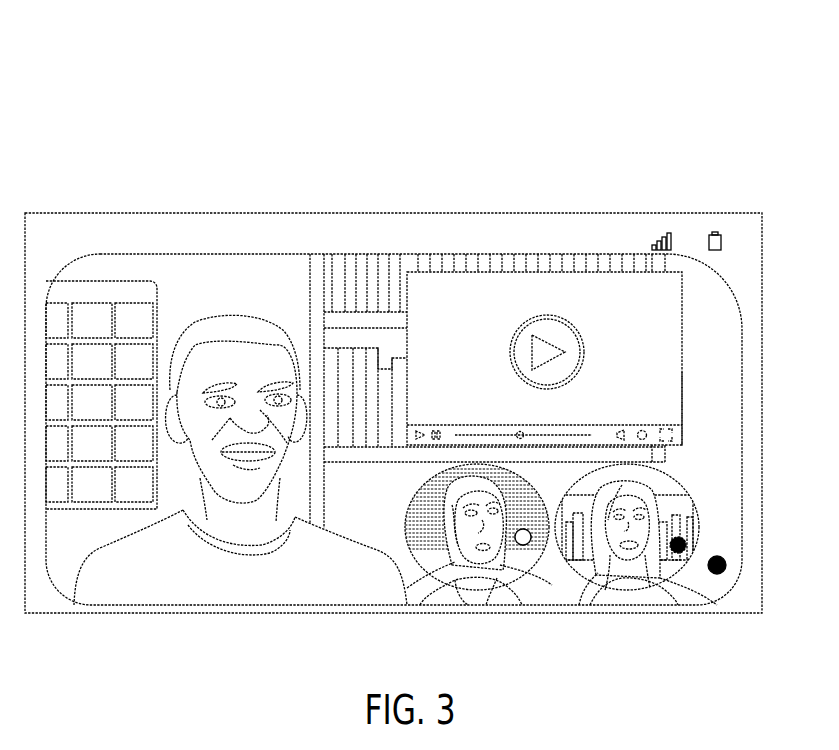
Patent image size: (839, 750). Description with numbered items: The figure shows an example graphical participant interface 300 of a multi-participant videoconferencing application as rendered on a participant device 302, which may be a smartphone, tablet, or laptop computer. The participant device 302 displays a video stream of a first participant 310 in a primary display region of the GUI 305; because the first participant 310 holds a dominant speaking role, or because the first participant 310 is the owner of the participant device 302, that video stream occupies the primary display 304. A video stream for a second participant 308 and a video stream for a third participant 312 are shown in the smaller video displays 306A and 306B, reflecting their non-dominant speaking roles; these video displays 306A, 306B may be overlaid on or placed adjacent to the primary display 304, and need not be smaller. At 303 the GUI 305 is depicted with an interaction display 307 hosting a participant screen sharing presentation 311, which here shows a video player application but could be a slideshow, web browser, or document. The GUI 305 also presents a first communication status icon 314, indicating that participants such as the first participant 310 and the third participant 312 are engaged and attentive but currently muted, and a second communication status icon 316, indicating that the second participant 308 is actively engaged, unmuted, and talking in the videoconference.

The example graphical participant interface 300 is at (214, 62).
The participant device 302 is at (563, 213).
The interaction display view 303 is at (49, 183).
The primary display 304 is at (68, 267).
The GUI 305 is at (234, 272).
The video display 306A is at (424, 574).
The video display 306B is at (589, 580).
The interaction display 307 is at (515, 272).
The second participant 308 is at (457, 562).
The first participant 310 is at (201, 492).
The participant screen sharing presentation 311 is at (682, 362).
The third participant 312 is at (605, 566).
The first communication status icon 314 is at (717, 575).
The second communication status icon 316 is at (519, 546).